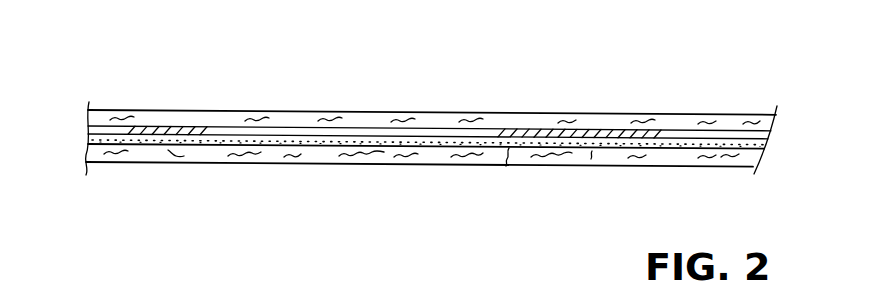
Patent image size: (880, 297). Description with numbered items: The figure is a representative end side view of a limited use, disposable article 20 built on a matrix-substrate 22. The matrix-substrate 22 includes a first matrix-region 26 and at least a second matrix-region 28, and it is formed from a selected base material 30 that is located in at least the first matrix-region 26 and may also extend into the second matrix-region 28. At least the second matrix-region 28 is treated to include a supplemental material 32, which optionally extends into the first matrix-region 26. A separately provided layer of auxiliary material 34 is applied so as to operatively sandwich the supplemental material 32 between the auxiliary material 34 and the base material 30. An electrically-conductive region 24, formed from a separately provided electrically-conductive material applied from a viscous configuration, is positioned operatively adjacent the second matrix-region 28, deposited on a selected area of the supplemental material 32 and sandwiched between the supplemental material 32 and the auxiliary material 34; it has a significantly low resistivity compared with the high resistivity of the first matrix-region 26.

The disposable article 20 is at (110, 84).
The matrix-substrate 22 is at (115, 164).
The electrically-conductive region 24 is at (153, 127).
The first matrix-region 26 is at (421, 172).
The second matrix-region 28 is at (577, 168).
The base material 30 is at (317, 157).
The supplemental material 32 is at (428, 138).
The auxiliary material 34 is at (288, 112).